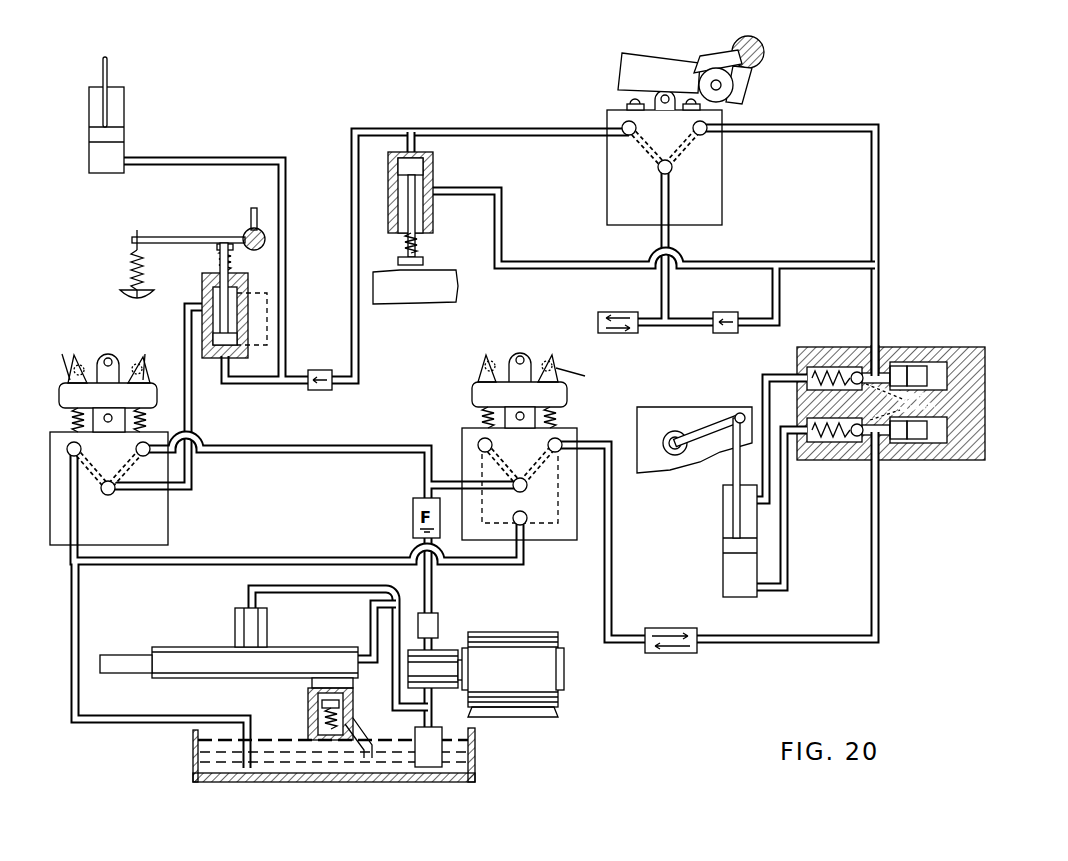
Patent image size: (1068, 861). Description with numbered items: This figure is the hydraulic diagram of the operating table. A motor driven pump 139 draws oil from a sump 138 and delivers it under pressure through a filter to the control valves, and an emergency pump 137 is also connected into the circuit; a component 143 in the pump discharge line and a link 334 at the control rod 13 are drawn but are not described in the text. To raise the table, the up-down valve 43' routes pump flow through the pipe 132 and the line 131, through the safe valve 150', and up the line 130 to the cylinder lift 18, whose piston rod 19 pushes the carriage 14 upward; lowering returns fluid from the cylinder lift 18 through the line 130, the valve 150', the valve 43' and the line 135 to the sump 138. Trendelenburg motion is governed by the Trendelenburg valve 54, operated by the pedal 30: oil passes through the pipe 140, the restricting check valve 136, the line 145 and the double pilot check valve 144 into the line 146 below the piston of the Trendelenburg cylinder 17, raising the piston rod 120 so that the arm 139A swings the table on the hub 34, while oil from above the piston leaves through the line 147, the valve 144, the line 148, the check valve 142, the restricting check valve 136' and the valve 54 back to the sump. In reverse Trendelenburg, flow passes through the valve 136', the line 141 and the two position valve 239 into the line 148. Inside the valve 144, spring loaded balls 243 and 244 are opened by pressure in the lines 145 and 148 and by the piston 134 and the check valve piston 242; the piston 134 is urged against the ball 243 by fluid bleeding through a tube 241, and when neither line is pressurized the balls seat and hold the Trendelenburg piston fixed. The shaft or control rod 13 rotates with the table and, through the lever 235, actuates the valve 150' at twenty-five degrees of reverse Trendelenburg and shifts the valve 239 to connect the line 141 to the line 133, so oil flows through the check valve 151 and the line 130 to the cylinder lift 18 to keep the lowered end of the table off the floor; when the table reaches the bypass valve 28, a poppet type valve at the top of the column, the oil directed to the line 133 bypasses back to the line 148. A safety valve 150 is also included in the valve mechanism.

The shaft or control rod 13 is at (250, 230).
The carriage 14 is at (450, 292).
The Trendelenburg cylinder 17 is at (718, 505).
The cylinder lift 18 is at (79, 115).
The piston rod 19 is at (103, 65).
The bypass valve 28 is at (433, 165).
The Trendelenburg pedal 30 is at (570, 427).
The hub 34 is at (668, 432).
The up-down valve 43' is at (93, 442).
The Trendelenburg valve 54 is at (551, 458).
The piston rod 120 is at (733, 458).
The line 130 is at (287, 281).
The line 131 is at (193, 417).
The pipe 132 is at (232, 452).
The line 133 is at (360, 343).
The piston 134 is at (918, 440).
The line 135 is at (72, 562).
The restricting check valve 136 is at (671, 624).
The restricting check valve 136' is at (632, 325).
The emergency pump 137 is at (182, 657).
The sump 138 is at (272, 748).
The motor driven pump 139 is at (440, 652).
The arm 139A is at (693, 428).
The pipe 140 is at (588, 440).
The line 141 is at (642, 335).
The check valve 142 is at (724, 312).
The relief valve 143 is at (438, 628).
The double pilot check valve 144 is at (923, 408).
The line 145 is at (870, 512).
The line 146 is at (788, 562).
The line 147 is at (768, 378).
The line 148 is at (879, 280).
The safety valve 150 is at (340, 704).
The safe valve 150' is at (213, 300).
The check valve 151 is at (318, 370).
The lever 235 is at (198, 236).
The two position valve 239 is at (716, 205).
The tube 241 is at (940, 410).
The check valve piston 242 is at (918, 372).
The ball 243 is at (850, 436).
The ball 244 is at (853, 368).
The link 334 is at (712, 60).